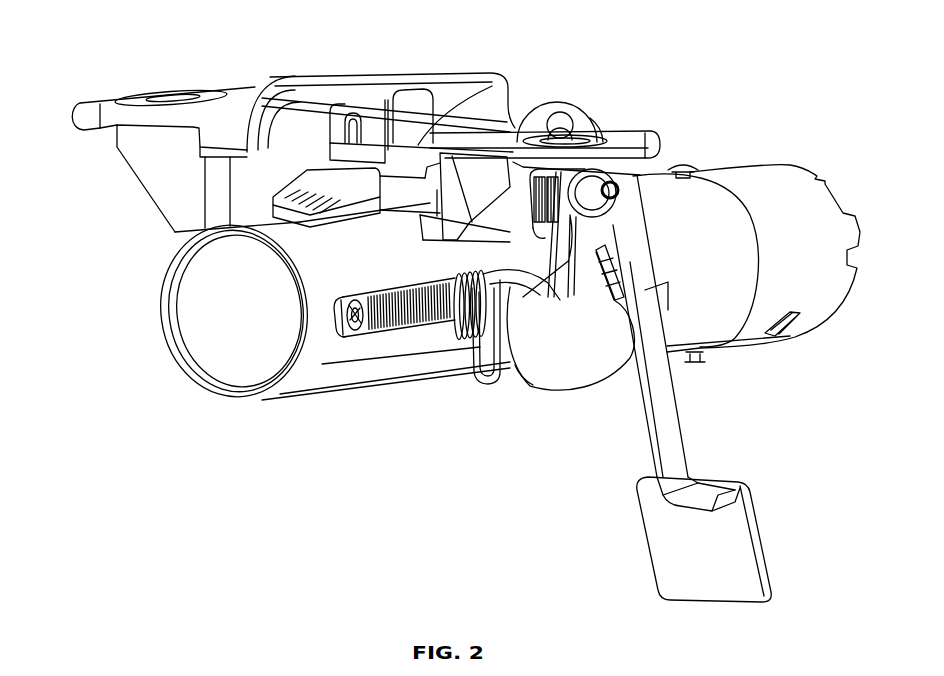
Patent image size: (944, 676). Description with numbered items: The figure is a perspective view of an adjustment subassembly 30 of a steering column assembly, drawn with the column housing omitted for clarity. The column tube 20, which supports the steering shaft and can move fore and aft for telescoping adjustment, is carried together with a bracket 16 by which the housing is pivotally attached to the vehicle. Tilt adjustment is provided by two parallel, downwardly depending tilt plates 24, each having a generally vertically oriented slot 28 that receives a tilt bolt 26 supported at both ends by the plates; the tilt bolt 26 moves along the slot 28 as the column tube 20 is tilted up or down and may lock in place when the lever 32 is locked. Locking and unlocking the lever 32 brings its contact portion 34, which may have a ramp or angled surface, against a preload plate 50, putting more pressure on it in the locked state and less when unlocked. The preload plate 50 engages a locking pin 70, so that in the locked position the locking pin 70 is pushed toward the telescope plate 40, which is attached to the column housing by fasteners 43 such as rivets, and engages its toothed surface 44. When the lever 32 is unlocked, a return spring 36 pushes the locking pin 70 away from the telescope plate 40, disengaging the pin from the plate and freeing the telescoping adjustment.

The bracket 16 is at (237, 108).
The column tube 20 is at (693, 197).
The tilt plates 24 is at (372, 122).
The tilt bolt 26 is at (393, 163).
The slot 28 is at (350, 130).
The adjustment subassembly 30 is at (490, 417).
The lever 32 is at (738, 568).
The contact portion 34 is at (573, 353).
The return spring 36 is at (463, 318).
The telescope plate 40 is at (337, 330).
The fasteners 43 is at (347, 328).
The toothed surface 44 is at (375, 328).
The preload plate 50 is at (517, 370).
The locking pin 70 is at (472, 317).